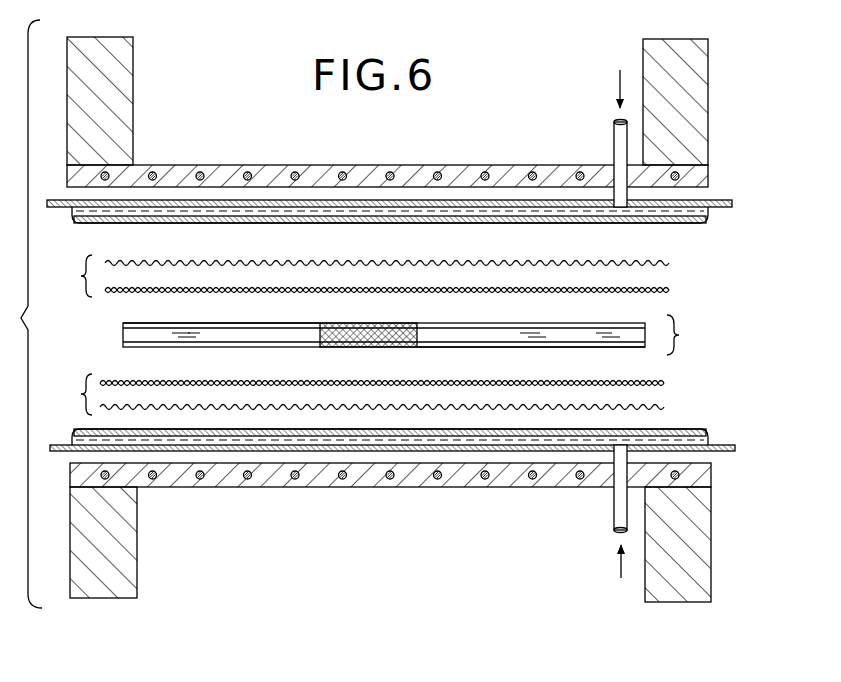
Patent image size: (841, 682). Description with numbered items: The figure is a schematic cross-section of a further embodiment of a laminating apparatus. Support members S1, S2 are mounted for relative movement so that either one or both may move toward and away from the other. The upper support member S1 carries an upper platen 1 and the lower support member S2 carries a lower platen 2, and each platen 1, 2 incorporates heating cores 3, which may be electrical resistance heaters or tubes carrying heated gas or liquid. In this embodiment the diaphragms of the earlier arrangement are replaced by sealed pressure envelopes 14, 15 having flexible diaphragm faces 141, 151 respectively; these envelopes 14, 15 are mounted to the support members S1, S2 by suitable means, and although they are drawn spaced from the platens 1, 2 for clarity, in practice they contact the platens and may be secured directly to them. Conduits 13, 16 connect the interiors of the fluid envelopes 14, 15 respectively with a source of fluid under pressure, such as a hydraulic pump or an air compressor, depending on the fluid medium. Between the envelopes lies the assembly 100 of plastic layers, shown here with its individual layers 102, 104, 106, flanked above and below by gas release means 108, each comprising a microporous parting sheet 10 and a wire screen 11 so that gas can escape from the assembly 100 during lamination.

The upper support member S1 is at (125, 68).
The lower support member S2 is at (125, 546).
The upper platen 1 is at (362, 174).
The lower platen 2 is at (370, 476).
The heating cores 3 is at (291, 173).
The conduit 13 is at (617, 136).
The sealed pressure envelope 14 is at (192, 230).
The flexible diaphragm face 141 is at (330, 223).
The sealed pressure envelope 15 is at (72, 427).
The flexible diaphragm face 151 is at (348, 430).
The conduit 16 is at (614, 516).
The microporous parting sheet 10 is at (666, 290).
The wire screen 11 is at (665, 265).
The gas release means 108 is at (83, 292).
The assembly of plastic layers 100 is at (679, 335).
The lower substrate 102 is at (457, 347).
The bonding layer 104 is at (392, 329).
The upper substrate 106 is at (278, 328).